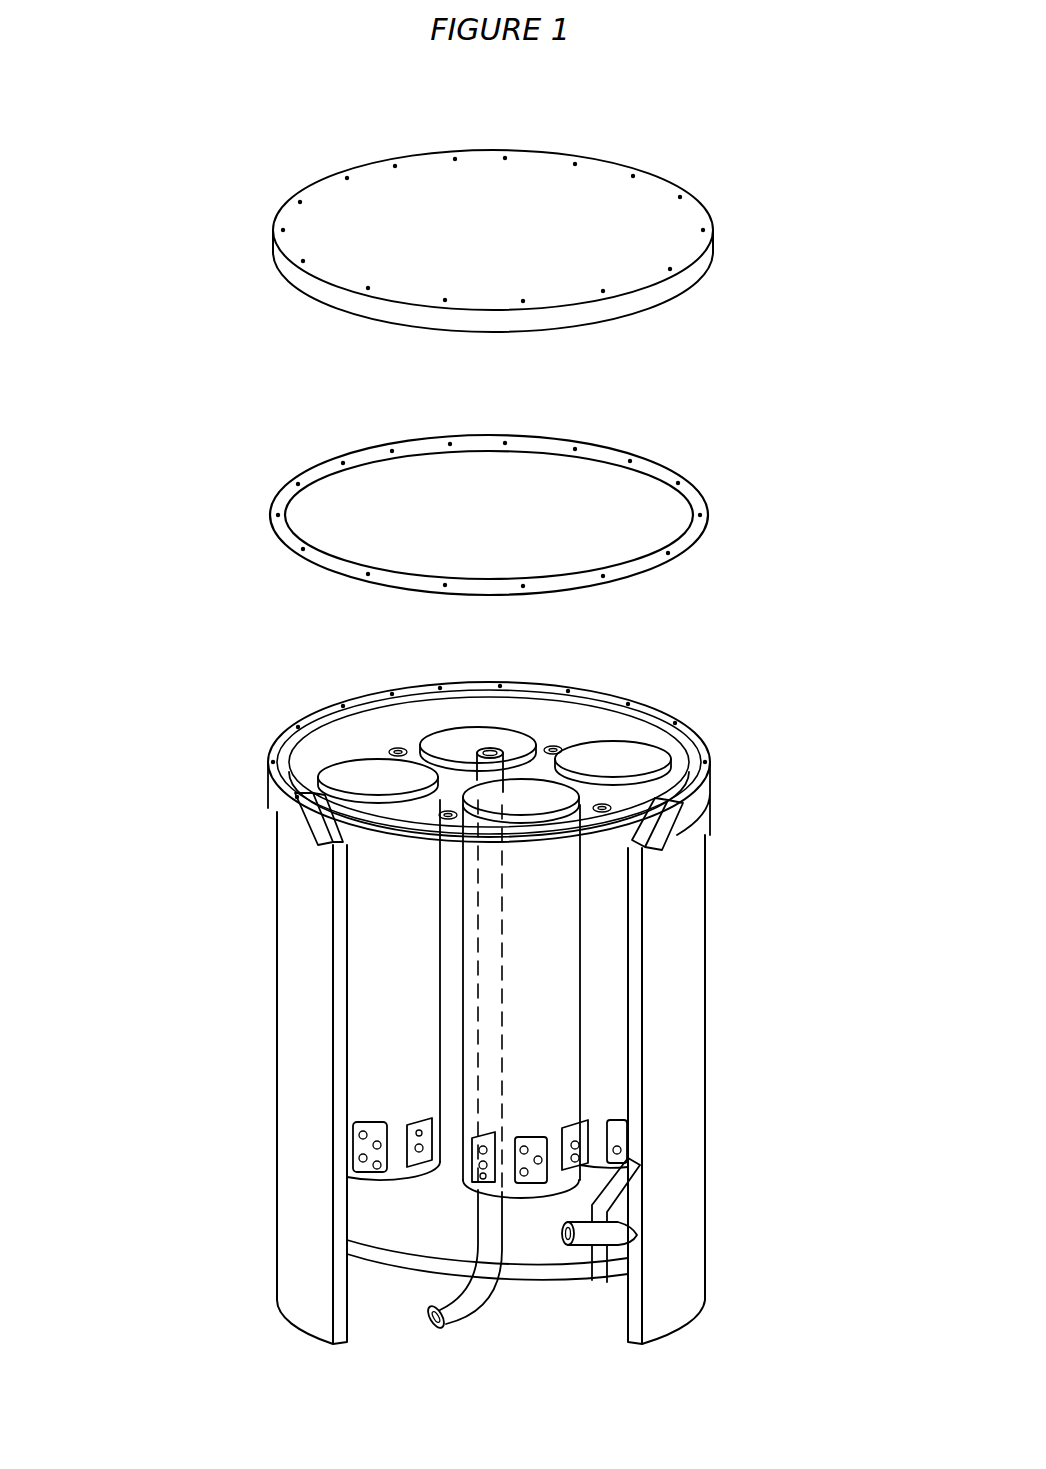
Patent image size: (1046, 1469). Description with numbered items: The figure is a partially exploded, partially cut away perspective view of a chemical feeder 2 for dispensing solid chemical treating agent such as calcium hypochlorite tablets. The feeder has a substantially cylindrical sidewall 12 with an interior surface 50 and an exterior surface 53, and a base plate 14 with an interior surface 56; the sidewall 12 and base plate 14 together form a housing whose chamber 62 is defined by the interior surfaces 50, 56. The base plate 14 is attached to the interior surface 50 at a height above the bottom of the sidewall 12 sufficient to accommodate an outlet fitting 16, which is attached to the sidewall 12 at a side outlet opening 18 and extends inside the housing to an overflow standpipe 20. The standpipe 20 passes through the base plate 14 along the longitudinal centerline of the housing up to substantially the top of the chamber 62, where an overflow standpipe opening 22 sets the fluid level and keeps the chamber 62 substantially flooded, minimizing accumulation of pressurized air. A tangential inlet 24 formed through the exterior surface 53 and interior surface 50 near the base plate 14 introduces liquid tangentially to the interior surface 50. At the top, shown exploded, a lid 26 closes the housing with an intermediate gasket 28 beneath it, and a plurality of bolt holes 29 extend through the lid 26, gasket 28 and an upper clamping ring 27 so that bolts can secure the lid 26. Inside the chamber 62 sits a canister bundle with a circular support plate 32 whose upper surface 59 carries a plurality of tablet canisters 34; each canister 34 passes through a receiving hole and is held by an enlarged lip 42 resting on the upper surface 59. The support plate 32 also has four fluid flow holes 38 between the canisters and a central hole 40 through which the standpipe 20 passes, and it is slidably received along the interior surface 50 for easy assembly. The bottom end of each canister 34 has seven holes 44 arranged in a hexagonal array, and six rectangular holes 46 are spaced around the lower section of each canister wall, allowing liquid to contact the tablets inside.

The chemical feeder 2 is at (160, 1303).
The sidewall 12 is at (277, 1140).
The base plate 14 is at (595, 1262).
The outlet fitting 16 is at (475, 1300).
The side outlet opening 18 is at (435, 1322).
The overflow standpipe 20 is at (585, 748).
The overflow standpipe opening 22 is at (600, 745).
The tangential inlet 24 is at (632, 1233).
The lid 26 is at (663, 298).
The upper clamping ring 27 is at (300, 843).
The intermediate gasket 28 is at (700, 490).
The bolt holes 29 is at (455, 159).
The circular support plate 32 is at (632, 880).
The tablet canisters 34 is at (415, 740).
The fluid flow holes 38 is at (393, 750).
The central hole 40 is at (490, 745).
The enlarged lip 42 is at (473, 745).
The holes 44 is at (628, 1158).
The rectangular holes 46 is at (615, 1115).
The interior surface 50 is at (367, 703).
The exterior surface 53 is at (680, 1020).
The interior surface 56 is at (548, 1252).
The upper surface 59 is at (707, 782).
The chamber 62 is at (450, 1229).